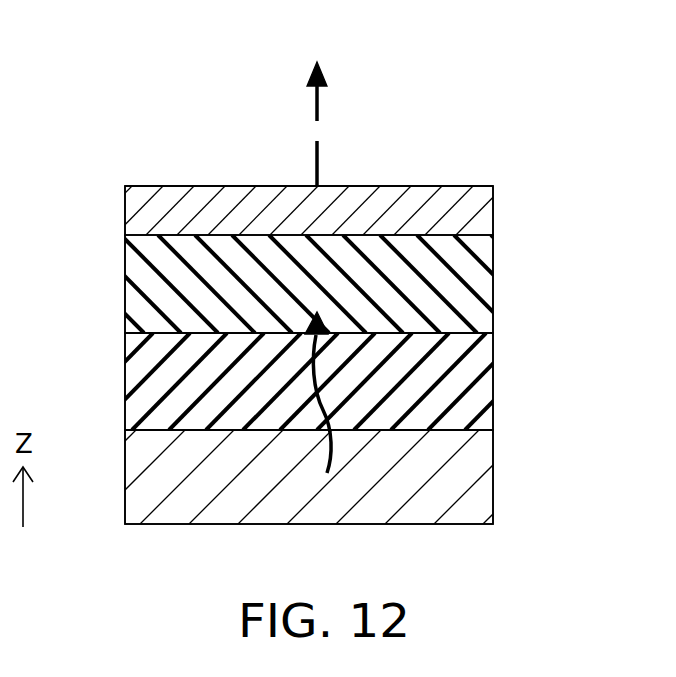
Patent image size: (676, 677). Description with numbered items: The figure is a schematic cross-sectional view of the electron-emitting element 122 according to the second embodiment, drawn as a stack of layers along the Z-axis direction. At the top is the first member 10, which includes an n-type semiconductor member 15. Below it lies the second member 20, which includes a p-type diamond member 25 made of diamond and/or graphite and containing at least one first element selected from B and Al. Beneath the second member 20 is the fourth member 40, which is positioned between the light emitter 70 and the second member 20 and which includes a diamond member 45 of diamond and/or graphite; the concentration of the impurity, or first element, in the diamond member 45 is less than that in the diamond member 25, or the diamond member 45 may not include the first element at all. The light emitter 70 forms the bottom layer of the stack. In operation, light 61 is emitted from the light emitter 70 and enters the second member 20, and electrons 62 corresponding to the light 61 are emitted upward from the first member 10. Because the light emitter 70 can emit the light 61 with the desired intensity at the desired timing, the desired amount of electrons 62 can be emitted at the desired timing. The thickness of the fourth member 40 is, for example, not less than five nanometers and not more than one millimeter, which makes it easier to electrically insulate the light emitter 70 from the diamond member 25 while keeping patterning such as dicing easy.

The electron-emitting element 122 is at (532, 103).
The n-type semiconductor member 15 is at (474, 200).
The first member 10 is at (462, 217).
The second member 20 is at (453, 263).
The p-type diamond member 25 is at (453, 298).
The fourth member 40 is at (458, 358).
The diamond member 45 is at (460, 402).
The light emitter 70 is at (458, 480).
The electrons 62 is at (315, 99).
The light 61 is at (323, 380).